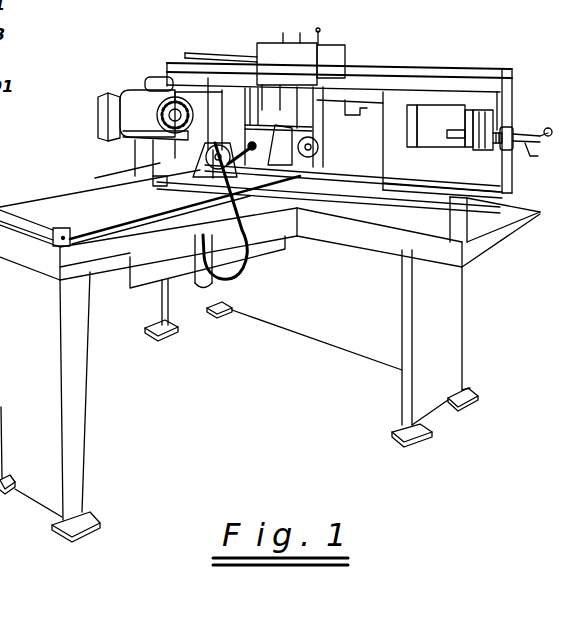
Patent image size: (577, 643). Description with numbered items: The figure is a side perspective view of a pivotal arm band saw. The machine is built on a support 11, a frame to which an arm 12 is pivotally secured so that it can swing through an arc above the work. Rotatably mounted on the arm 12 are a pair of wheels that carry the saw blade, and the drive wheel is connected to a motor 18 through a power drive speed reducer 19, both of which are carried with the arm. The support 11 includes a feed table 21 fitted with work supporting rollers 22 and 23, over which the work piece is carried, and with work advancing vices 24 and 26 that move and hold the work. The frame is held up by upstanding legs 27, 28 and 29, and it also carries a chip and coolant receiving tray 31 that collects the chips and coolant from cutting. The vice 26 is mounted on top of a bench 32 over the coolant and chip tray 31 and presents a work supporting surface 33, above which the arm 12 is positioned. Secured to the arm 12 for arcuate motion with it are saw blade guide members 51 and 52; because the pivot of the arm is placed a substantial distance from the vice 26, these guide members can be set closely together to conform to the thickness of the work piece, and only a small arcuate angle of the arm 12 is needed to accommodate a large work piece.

The support 11 is at (484, 280).
The arm 12 is at (516, 60).
The motor 18 is at (137, 98).
The power drive speed reducer 19 is at (207, 98).
The feed table 21 is at (115, 250).
The work supporting roller 22 is at (31, 222).
The work supporting roller 23 is at (168, 189).
The work advancing vice 24 is at (195, 154).
The work advancing vice 26 is at (283, 100).
The upstanding leg 27 is at (196, 308).
The upstanding leg 28 is at (452, 358).
The upstanding leg 29 is at (78, 415).
The chip and coolant receiving tray 31 is at (513, 214).
The bench 32 is at (380, 215).
The work supporting surface 33 is at (281, 220).
The saw blade guide member 51 is at (275, 97).
The saw blade guide member 52 is at (318, 103).